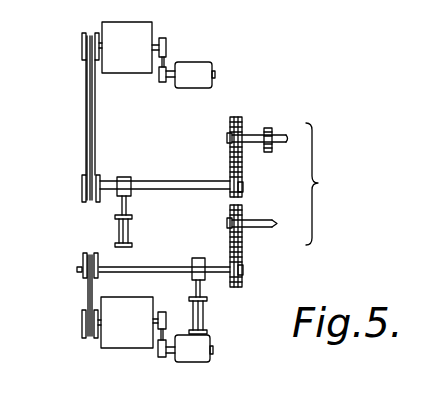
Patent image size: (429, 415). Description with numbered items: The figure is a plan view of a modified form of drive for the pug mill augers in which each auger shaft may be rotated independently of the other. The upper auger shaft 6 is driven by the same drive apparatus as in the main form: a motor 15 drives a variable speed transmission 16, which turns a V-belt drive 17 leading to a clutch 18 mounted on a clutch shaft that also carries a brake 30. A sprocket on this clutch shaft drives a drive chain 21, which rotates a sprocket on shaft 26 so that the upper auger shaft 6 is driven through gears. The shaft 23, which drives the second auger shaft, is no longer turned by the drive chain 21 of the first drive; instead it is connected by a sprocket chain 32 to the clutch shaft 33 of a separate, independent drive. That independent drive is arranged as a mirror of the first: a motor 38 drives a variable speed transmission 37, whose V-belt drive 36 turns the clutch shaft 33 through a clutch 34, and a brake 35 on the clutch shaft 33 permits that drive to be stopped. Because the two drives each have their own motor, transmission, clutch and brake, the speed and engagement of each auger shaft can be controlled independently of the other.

The auger shaft 6 is at (285, 135).
The motor 15 is at (187, 78).
The variable speed transmission 16 is at (128, 64).
The V-belt drive 17 is at (97, 124).
The clutch 18 is at (82, 190).
The drive chain 21 is at (230, 162).
The shaft 23 is at (248, 227).
The shaft 26 is at (252, 135).
The brake 30 is at (128, 171).
The sprocket chain 32 is at (242, 257).
The clutch shaft 33 is at (172, 250).
The clutch 34 is at (83, 262).
The brake 35 is at (213, 252).
The V-belt drive 36 is at (85, 300).
The variable speed transmission 37 is at (147, 291).
The motor 38 is at (209, 353).